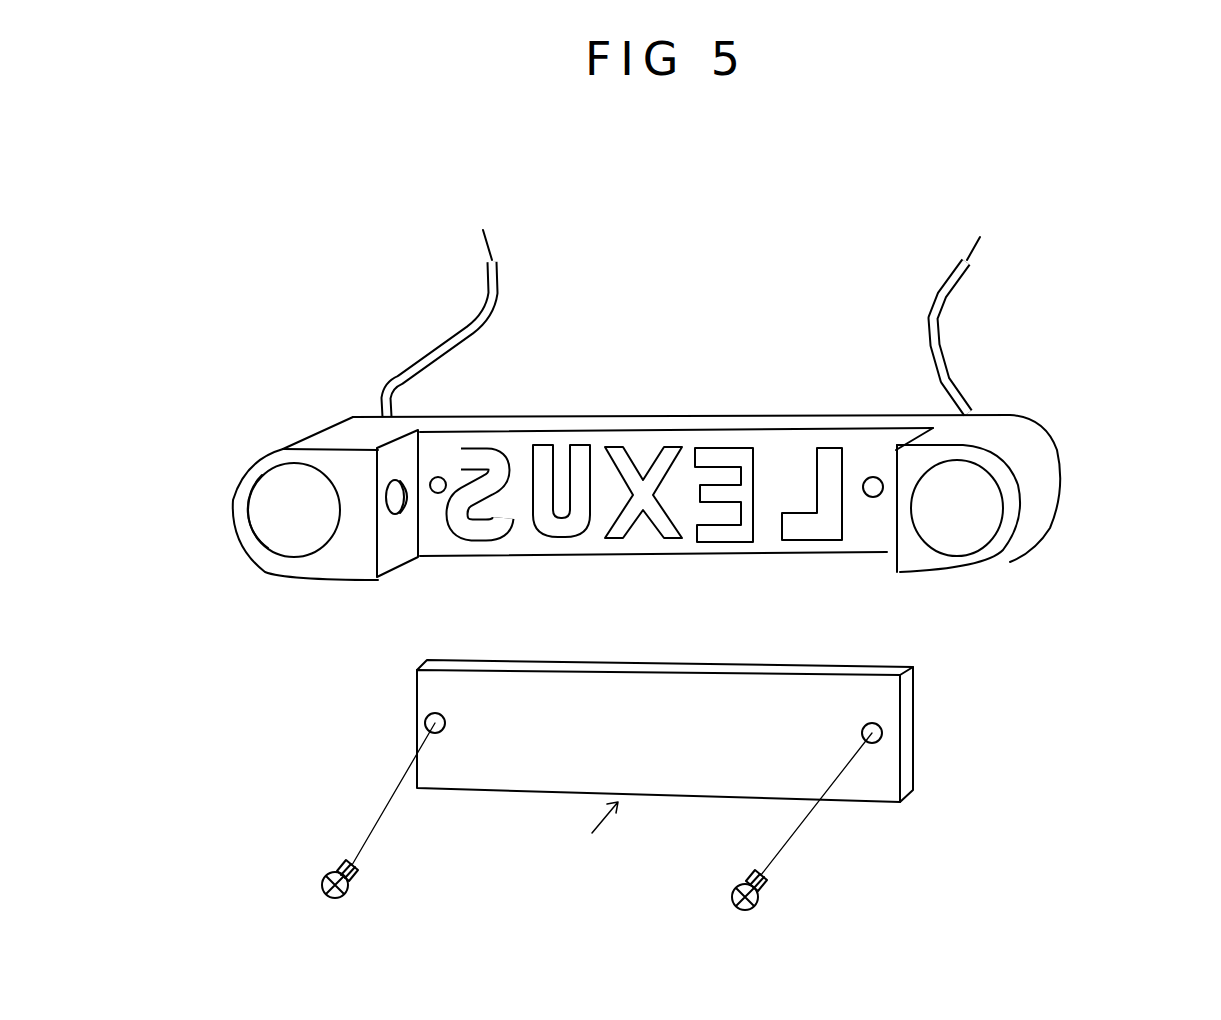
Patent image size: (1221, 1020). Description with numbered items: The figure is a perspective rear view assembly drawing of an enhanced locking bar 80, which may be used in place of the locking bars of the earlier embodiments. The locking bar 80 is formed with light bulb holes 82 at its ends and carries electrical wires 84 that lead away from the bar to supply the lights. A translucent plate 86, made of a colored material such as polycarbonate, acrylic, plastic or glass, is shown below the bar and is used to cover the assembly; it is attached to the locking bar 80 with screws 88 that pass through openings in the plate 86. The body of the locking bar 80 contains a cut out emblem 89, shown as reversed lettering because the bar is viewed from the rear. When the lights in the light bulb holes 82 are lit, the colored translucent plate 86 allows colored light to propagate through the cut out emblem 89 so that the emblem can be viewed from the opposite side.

The enhanced locking bar 80 is at (1053, 443).
The light bulb holes 82 is at (398, 520).
The electrical wires 84 is at (930, 310).
The translucent plate 86 is at (897, 660).
The screws 88 is at (340, 866).
The cut out emblem 89 is at (800, 548).